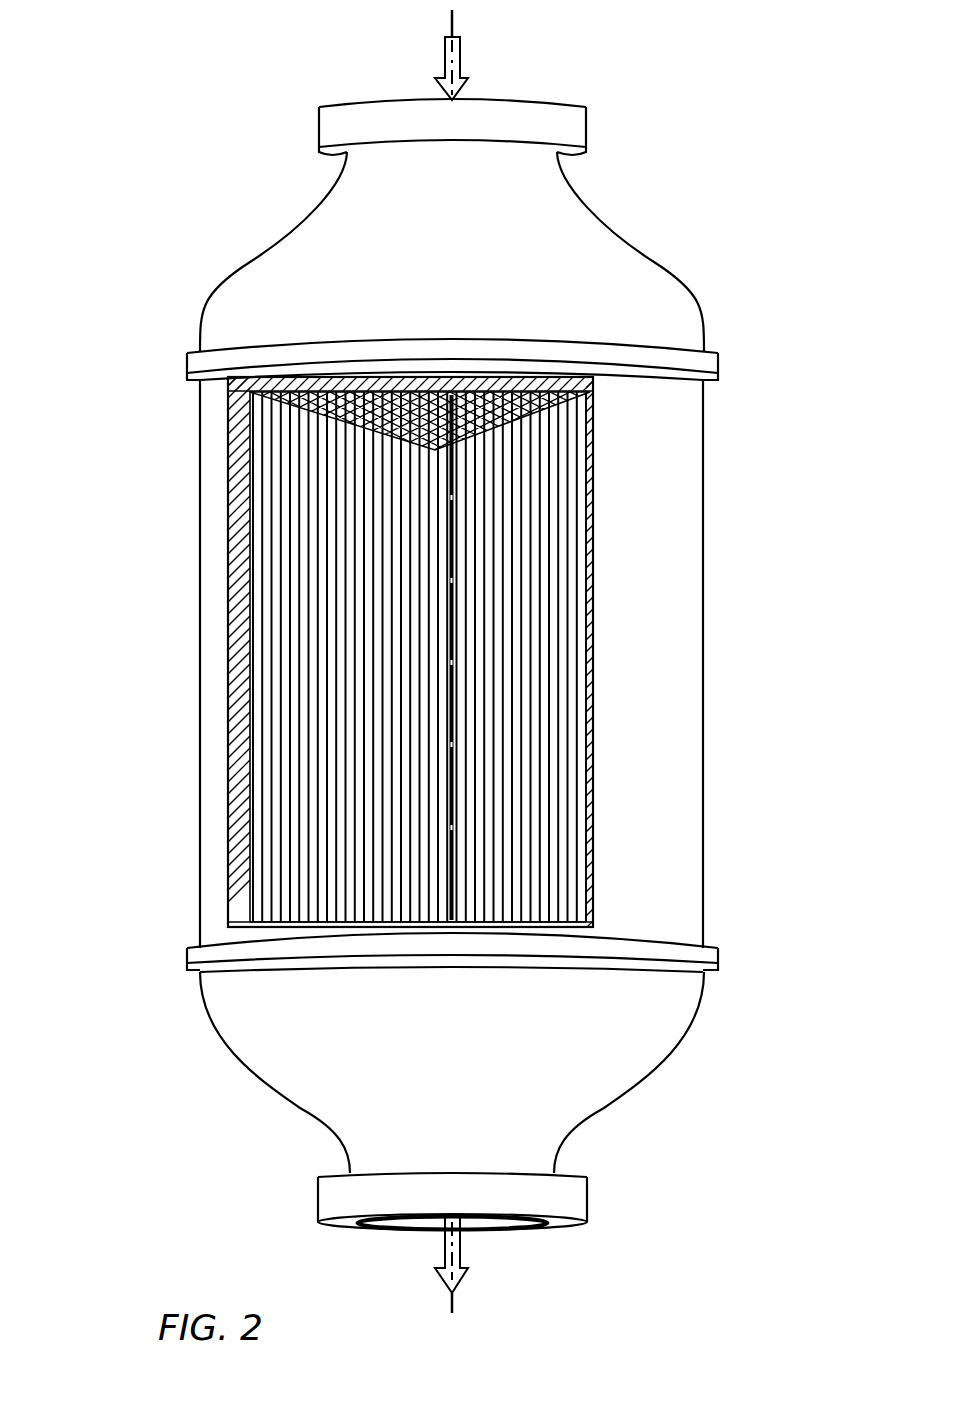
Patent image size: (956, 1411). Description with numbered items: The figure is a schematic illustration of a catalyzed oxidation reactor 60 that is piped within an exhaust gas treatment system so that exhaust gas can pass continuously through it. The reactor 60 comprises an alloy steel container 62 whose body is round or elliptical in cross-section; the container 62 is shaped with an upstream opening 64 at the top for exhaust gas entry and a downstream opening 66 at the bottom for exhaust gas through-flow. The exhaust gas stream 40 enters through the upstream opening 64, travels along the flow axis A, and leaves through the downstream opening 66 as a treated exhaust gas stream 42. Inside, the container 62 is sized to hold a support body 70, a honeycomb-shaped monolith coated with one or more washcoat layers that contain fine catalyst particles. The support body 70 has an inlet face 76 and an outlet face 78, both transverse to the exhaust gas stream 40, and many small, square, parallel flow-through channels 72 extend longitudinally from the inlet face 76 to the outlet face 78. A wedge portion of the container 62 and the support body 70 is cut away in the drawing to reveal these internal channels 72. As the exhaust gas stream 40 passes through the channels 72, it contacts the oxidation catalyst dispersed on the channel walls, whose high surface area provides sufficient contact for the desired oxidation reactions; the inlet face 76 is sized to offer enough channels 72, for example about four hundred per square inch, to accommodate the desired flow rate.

The catalyzed oxidation reactor 60 is at (150, 232).
The alloy steel container 62 is at (253, 247).
The upstream opening 64 is at (356, 100).
The downstream opening 66 is at (390, 1233).
The exhaust gas stream 40 is at (460, 59).
The treated exhaust gas stream 42 is at (460, 1250).
The support body 70 is at (273, 600).
The flow-through channels 72 is at (292, 798).
The inlet face 76 is at (298, 395).
The outlet face 78 is at (312, 920).
The flow axis A is at (453, 623).